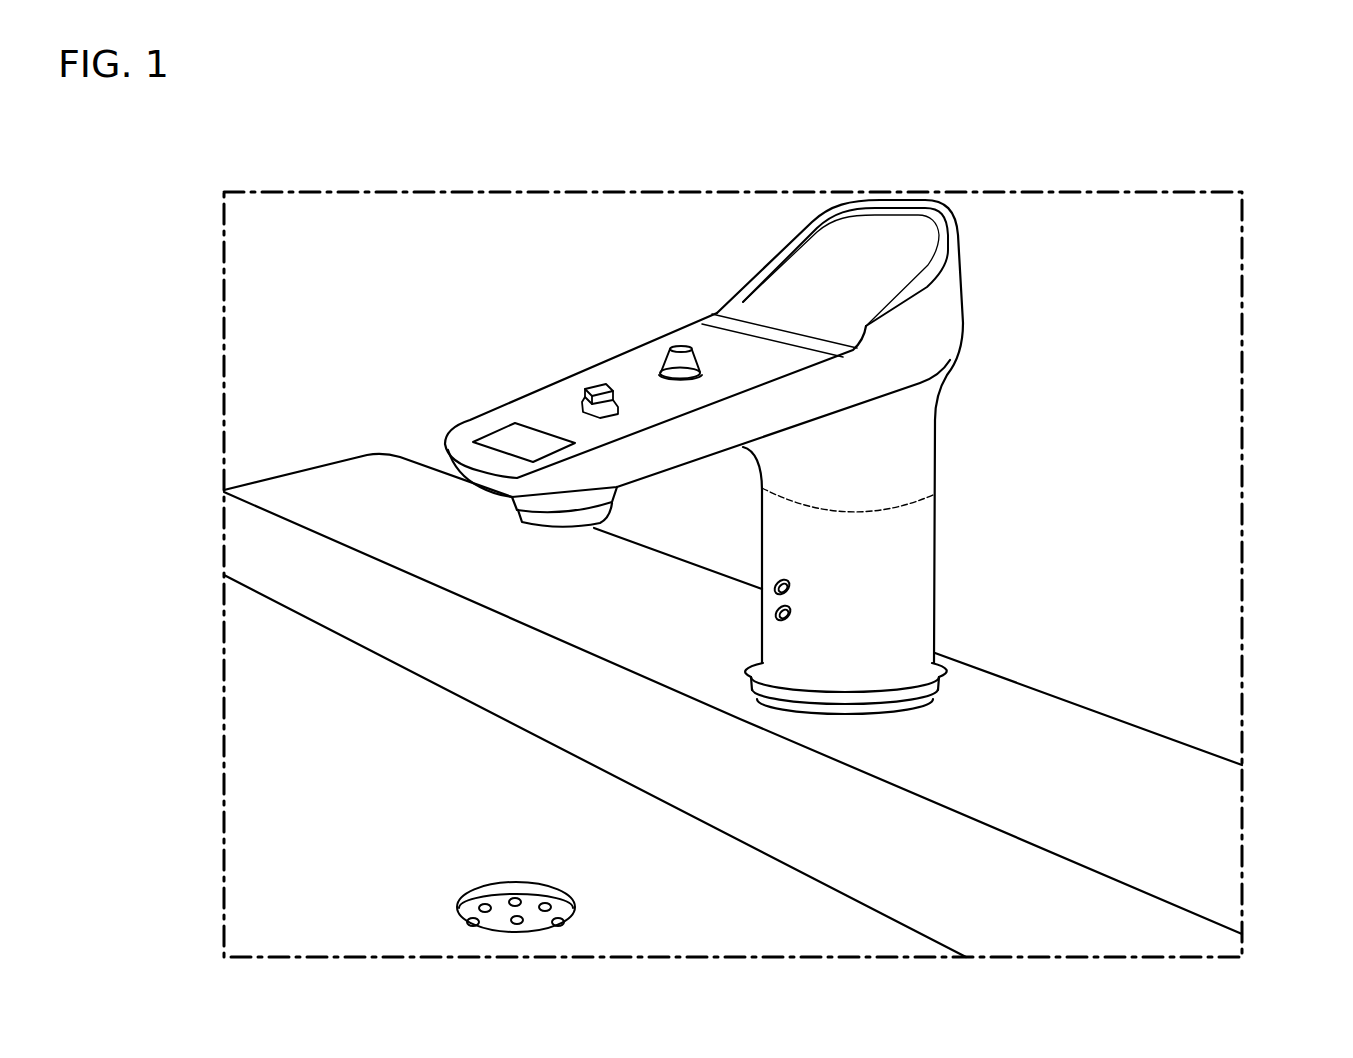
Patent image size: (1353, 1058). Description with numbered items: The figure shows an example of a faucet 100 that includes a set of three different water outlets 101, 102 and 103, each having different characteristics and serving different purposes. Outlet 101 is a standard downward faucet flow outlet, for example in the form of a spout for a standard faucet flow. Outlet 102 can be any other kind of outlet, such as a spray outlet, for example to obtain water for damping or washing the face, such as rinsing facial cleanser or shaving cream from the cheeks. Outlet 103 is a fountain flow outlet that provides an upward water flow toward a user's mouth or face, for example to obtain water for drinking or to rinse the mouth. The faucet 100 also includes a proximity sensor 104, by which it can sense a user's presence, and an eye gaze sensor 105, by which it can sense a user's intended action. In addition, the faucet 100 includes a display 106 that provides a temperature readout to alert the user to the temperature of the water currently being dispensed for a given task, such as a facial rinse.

The faucet 100 is at (768, 123).
The water outlet 101 is at (557, 535).
The water outlet 102 is at (595, 383).
The water outlet 103 is at (683, 345).
The proximity sensor 104 is at (790, 577).
The eye gaze sensor 105 is at (857, 265).
The display 106 is at (517, 446).